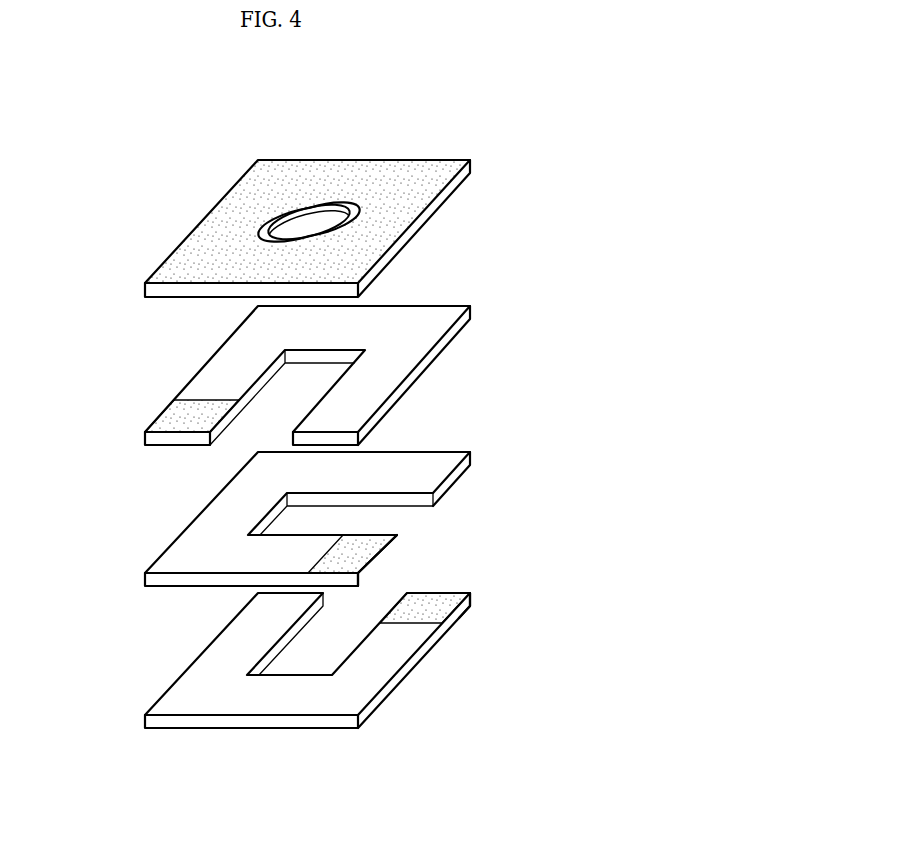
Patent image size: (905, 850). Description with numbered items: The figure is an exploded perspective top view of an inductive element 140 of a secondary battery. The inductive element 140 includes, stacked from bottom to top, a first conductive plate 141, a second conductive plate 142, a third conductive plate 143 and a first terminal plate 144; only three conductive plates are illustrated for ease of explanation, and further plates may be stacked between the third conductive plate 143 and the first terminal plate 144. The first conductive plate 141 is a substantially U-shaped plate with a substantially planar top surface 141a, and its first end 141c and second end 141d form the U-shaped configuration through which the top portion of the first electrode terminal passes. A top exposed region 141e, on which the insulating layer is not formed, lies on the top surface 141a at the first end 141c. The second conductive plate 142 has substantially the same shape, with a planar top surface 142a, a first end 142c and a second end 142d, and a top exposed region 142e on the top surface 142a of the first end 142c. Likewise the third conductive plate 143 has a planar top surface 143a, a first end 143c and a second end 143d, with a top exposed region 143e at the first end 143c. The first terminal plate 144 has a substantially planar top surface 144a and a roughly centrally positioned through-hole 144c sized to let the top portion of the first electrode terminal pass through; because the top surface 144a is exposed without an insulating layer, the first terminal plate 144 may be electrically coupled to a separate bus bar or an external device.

The inductive element 140 is at (572, 79).
The first conductive plate 141 is at (150, 665).
The top surface 141a is at (343, 697).
The first end 141c is at (472, 597).
The second end 141d is at (287, 592).
The top exposed region 141e is at (438, 613).
The second conductive plate 142 is at (470, 437).
The top surface 142a is at (407, 478).
The first end 142c is at (397, 538).
The second end 142d is at (470, 458).
The top exposed region 142e is at (357, 563).
The third conductive plate 143 is at (455, 287).
The top surface 143a is at (408, 355).
The first end 143c is at (153, 437).
The second end 143d is at (297, 436).
The top exposed region 143e is at (190, 410).
The first terminal plate 144 is at (285, 146).
The top surface 144a is at (417, 175).
The through-hole 144c is at (318, 212).